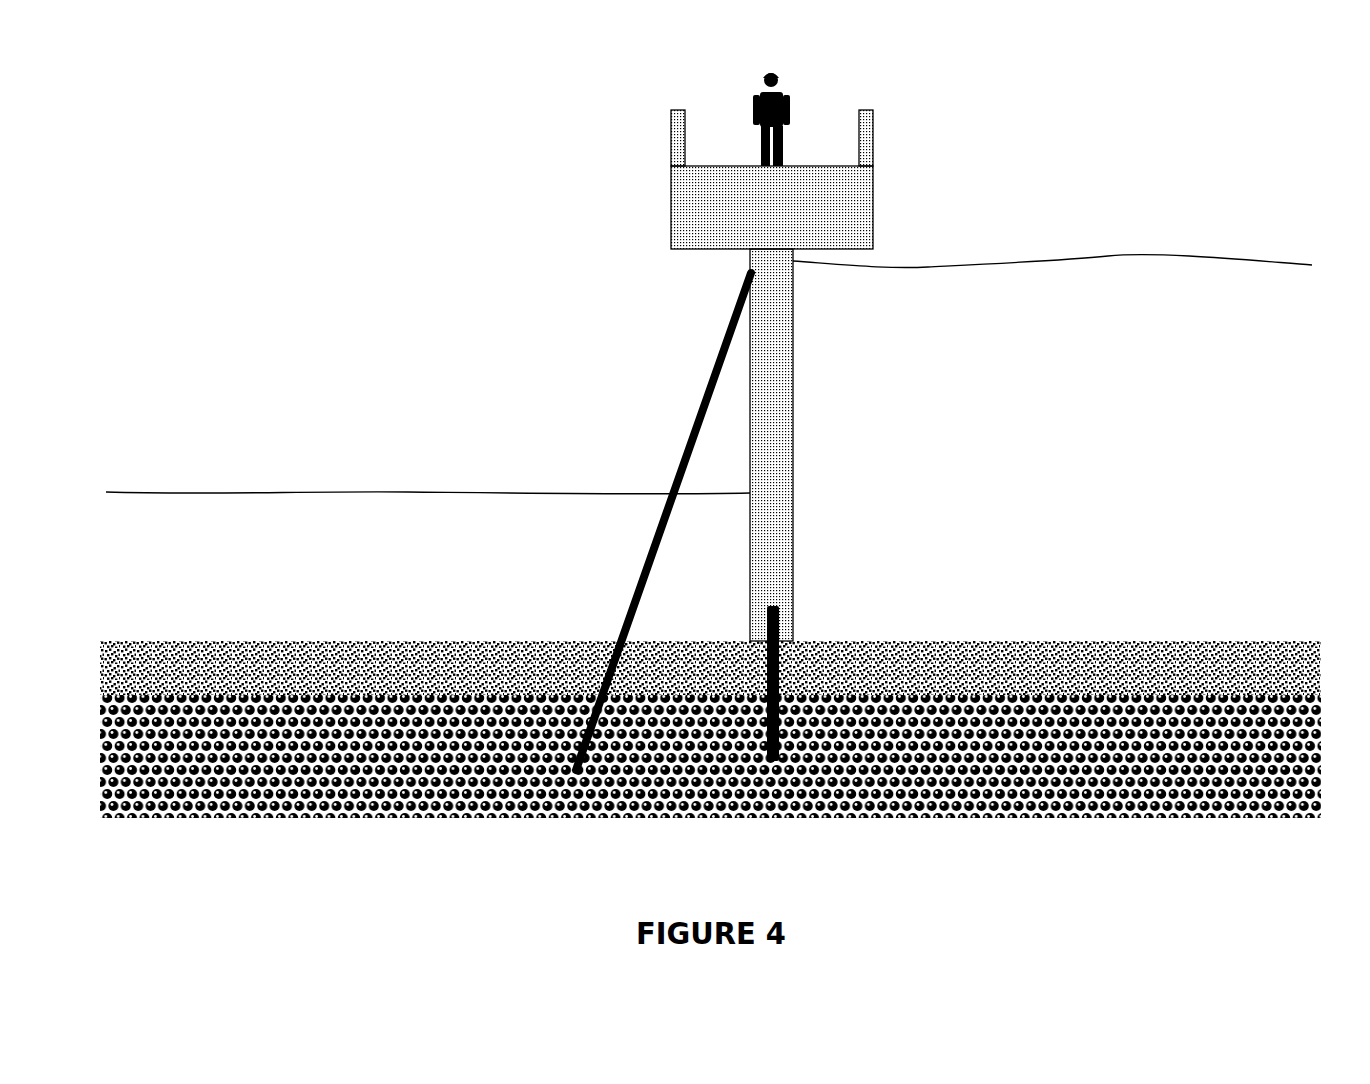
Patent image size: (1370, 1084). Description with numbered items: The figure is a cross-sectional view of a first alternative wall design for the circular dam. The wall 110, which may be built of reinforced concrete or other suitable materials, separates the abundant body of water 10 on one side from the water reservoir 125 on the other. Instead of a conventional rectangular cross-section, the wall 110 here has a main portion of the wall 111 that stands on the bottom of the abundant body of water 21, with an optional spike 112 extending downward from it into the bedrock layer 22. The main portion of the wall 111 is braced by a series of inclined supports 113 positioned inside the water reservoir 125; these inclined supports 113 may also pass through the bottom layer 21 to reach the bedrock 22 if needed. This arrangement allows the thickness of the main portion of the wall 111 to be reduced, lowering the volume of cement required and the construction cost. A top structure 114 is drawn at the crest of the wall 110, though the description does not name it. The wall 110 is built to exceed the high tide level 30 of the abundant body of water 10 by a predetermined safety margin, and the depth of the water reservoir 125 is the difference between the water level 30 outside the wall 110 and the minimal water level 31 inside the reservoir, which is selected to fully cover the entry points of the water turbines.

The wall 110 is at (545, 214).
The platform deck 114 is at (663, 205).
The main portion of the wall 111 is at (785, 418).
The inclined supports 113 is at (668, 466).
The spike 112 is at (774, 680).
The high tide level 30 is at (1090, 250).
The minimal water level 31 is at (345, 486).
The water reservoir 125 is at (416, 314).
The abundant body of water 10 is at (1132, 483).
The bottom of the abundant body of water 21 is at (1110, 658).
The bedrock layer 22 is at (1250, 705).